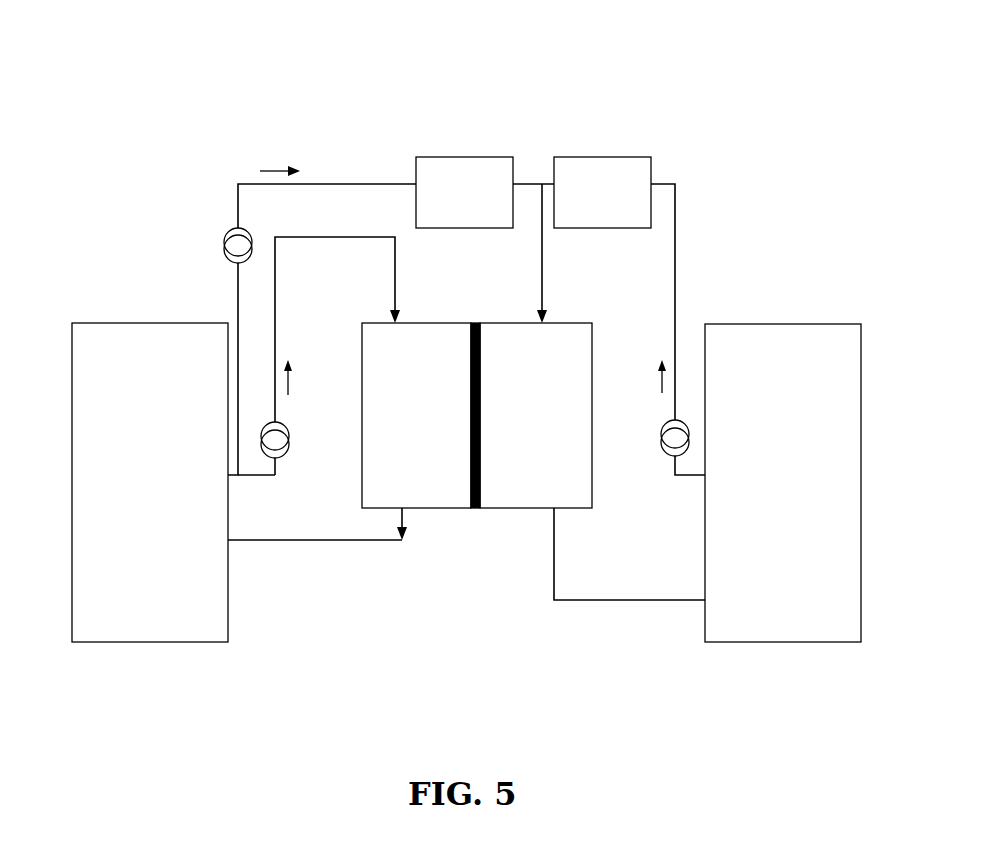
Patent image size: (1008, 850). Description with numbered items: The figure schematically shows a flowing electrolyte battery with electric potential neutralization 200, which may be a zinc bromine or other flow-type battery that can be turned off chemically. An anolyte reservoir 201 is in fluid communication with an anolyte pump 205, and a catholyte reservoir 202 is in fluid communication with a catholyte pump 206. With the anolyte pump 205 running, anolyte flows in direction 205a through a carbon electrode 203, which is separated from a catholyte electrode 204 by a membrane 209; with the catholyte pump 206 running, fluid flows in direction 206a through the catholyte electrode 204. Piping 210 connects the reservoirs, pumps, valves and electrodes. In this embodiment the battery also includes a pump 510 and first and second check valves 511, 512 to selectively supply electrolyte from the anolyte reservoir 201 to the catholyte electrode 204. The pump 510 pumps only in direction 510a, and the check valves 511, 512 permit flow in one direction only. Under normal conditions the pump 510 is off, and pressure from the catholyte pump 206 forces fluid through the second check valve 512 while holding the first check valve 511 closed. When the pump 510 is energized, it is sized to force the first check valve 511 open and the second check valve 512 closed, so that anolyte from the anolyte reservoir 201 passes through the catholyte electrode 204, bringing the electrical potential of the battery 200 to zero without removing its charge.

The flowing electrolyte battery with electric potential neutralization 200 is at (319, 61).
The anolyte reservoir 201 is at (139, 579).
The catholyte reservoir 202 is at (744, 579).
The carbon electrode 203 is at (422, 478).
The catholyte electrode 204 is at (505, 478).
The anolyte pump 205 is at (289, 448).
The anolyte flow direction 205a is at (288, 383).
The catholyte pump 206 is at (661, 450).
The catholyte flow direction 206a is at (662, 383).
The membrane 209 is at (474, 508).
The piping 210 is at (391, 175).
The pump 510 is at (224, 238).
The flow direction 510a is at (275, 167).
The first check valve 511 is at (475, 157).
The second check valve 512 is at (608, 157).